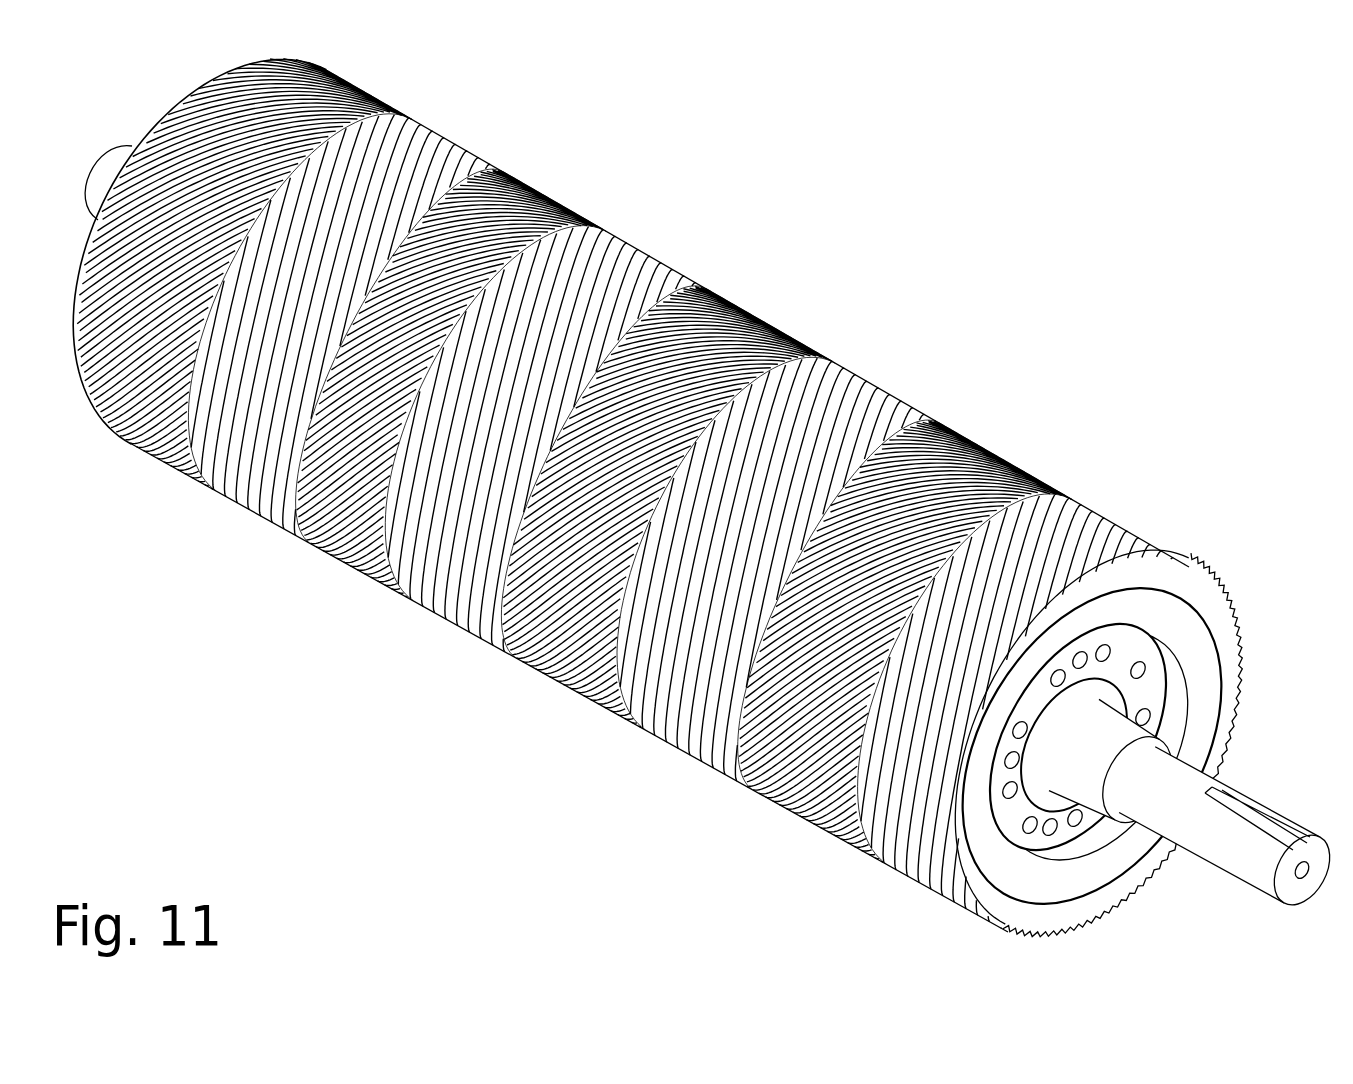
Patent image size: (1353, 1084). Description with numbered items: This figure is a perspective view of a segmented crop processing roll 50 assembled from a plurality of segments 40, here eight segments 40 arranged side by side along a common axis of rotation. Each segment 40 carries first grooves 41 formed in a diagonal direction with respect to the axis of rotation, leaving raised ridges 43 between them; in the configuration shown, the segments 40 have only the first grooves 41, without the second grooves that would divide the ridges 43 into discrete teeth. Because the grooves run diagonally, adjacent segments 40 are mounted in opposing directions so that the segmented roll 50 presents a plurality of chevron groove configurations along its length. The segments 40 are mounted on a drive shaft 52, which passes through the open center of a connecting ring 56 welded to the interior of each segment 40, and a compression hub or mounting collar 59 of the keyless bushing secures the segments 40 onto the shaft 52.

The segment 40 is at (360, 90).
The first grooves 41 is at (672, 305).
The ridges 43 is at (427, 158).
The segmented crop processing roll 50 is at (932, 252).
The drive shaft 52 is at (1257, 863).
The connecting ring 56 is at (1153, 613).
The mounting collar 59 is at (1150, 698).